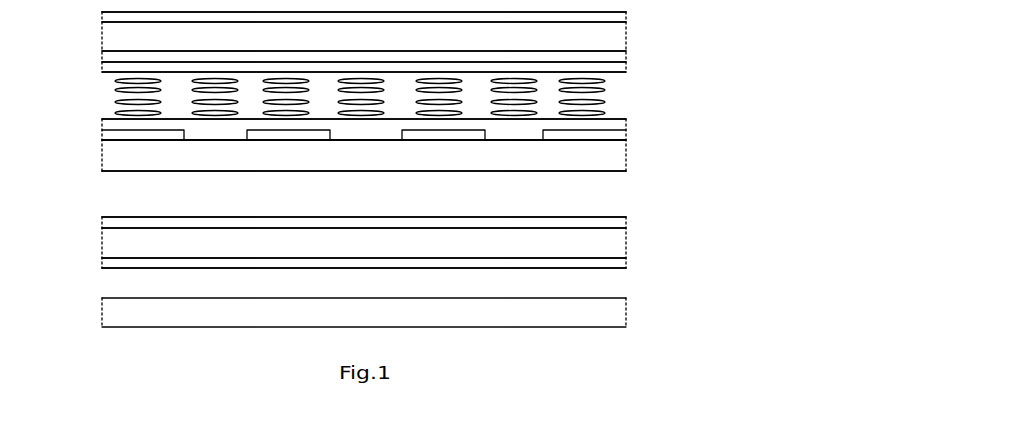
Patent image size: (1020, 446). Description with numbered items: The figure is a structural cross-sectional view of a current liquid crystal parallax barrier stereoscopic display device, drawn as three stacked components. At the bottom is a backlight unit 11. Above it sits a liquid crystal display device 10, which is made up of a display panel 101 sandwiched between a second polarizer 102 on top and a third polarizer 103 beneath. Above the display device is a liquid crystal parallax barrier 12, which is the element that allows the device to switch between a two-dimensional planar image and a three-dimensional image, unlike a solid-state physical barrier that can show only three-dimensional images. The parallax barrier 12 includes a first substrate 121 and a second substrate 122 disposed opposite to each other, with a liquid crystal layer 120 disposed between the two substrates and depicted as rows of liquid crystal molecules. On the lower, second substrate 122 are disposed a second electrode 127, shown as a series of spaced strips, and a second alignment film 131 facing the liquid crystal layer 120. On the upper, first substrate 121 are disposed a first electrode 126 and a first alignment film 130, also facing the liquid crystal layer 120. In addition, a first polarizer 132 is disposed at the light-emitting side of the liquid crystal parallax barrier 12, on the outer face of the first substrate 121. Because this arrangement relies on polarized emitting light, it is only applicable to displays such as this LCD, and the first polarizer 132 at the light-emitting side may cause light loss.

The liquid crystal parallax barrier 12 is at (328, 91).
The liquid crystal layer 120 is at (116, 97).
The first polarizer 132 is at (607, 17).
The first substrate 121 is at (607, 38).
The first electrode 126 is at (607, 57).
The first alignment film 130 is at (392, 79).
The second alignment film 131 is at (607, 123).
The second electrode 127 is at (394, 148).
The second substrate 122 is at (393, 166).
The liquid crystal display device 10 is at (337, 242).
The second polarizer 102 is at (607, 223).
The display panel 101 is at (607, 245).
The third polarizer 103 is at (607, 263).
The backlight unit 11 is at (108, 313).